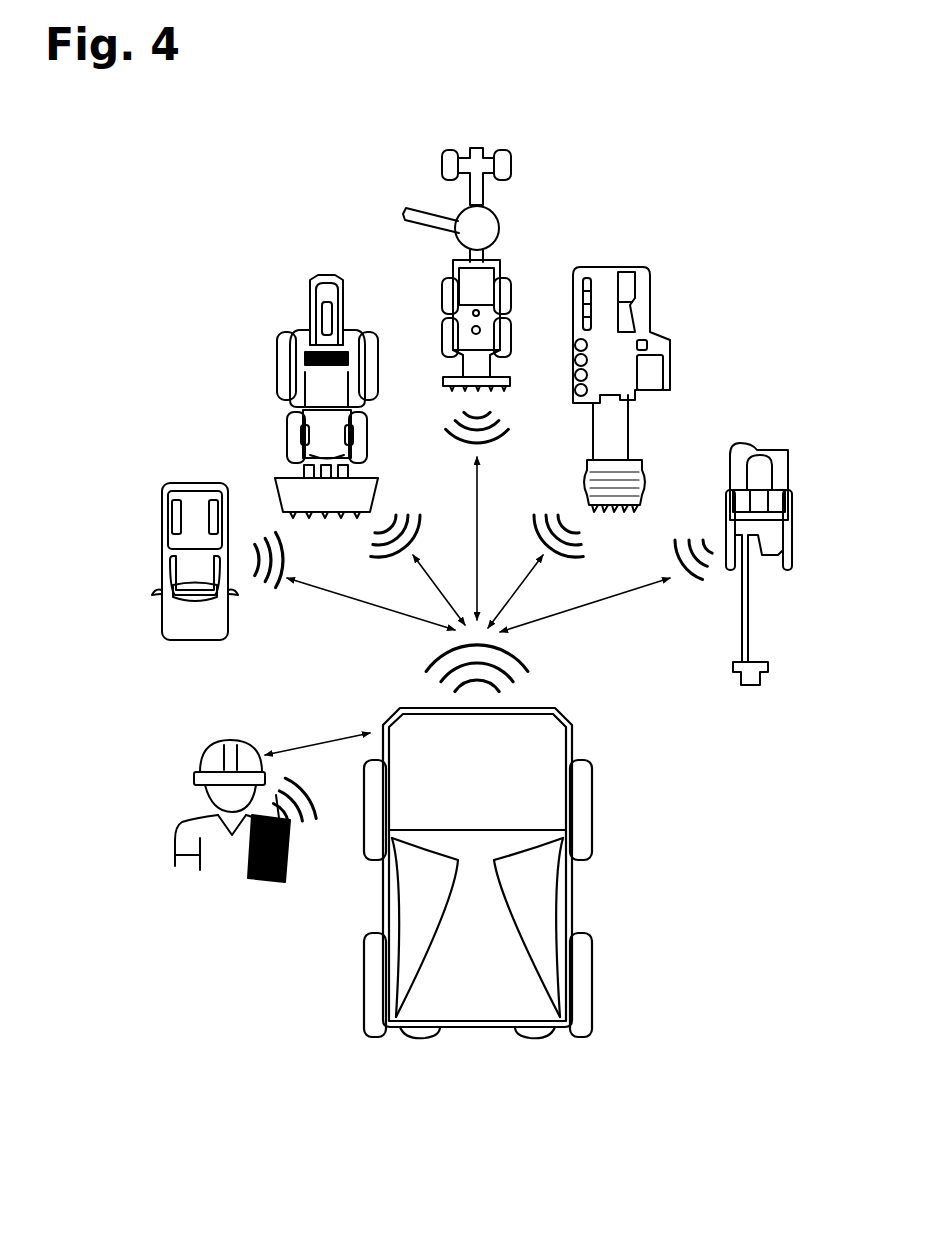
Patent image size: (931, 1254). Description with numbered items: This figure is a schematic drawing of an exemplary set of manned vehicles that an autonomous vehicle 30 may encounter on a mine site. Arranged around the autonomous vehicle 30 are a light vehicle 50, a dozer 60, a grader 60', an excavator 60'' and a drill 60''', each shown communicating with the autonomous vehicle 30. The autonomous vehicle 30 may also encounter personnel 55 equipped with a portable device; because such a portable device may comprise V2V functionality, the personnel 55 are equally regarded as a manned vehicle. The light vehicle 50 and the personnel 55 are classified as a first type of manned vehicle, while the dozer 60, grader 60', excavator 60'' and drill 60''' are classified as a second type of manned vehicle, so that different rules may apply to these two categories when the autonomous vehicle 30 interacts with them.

The autonomous vehicle 30 is at (472, 1010).
The light vehicle 50 is at (153, 522).
The personnel 55 is at (228, 878).
The dozer 60 is at (347, 378).
The grader 60' is at (472, 266).
The excavator 60'' is at (619, 383).
The drill 60''' is at (768, 539).